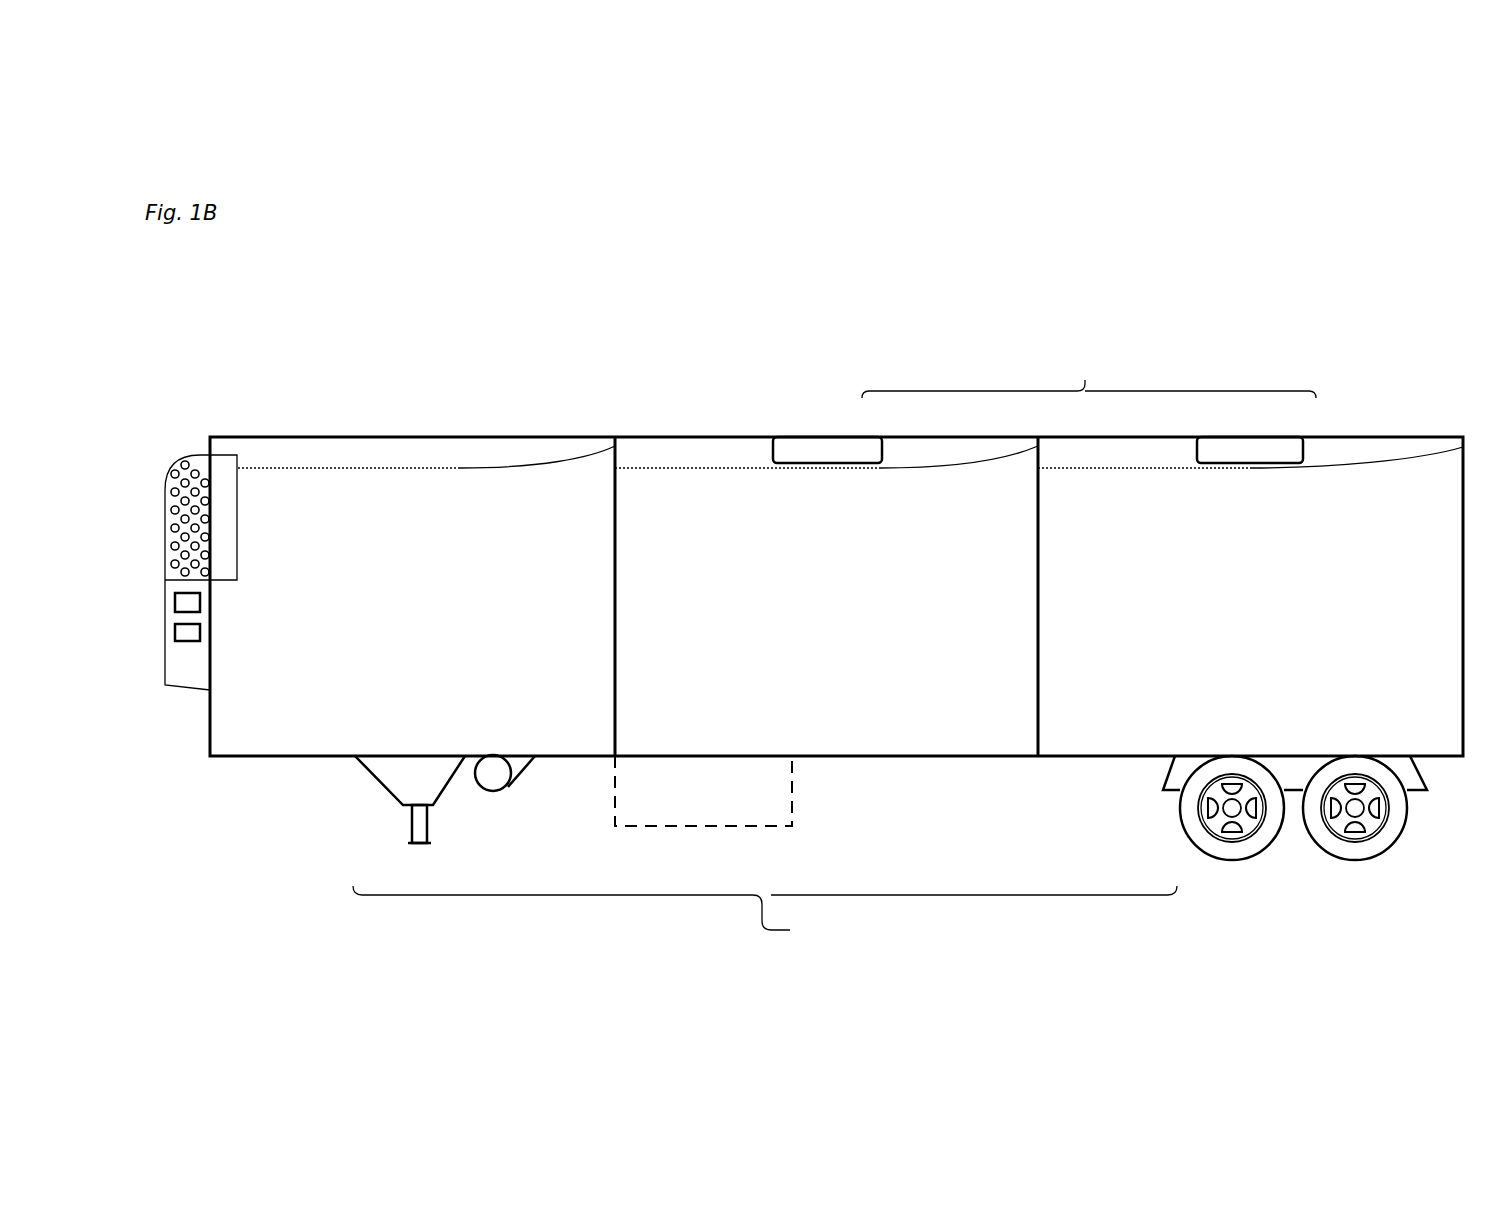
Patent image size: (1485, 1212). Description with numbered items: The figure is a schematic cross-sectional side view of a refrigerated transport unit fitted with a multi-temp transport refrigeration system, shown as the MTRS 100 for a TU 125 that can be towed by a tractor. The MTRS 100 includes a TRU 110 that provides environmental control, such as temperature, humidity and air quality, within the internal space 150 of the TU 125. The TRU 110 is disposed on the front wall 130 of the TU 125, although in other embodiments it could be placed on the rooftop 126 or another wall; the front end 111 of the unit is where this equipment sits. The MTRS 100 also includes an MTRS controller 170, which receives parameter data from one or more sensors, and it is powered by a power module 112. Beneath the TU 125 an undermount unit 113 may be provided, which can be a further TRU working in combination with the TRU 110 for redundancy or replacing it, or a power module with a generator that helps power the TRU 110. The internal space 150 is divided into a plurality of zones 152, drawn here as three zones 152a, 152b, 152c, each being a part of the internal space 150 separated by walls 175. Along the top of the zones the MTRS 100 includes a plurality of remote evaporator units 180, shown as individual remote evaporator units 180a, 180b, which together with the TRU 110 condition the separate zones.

The MTRS 100 is at (565, 300).
The front end 111 is at (158, 422).
The TRU 110 is at (188, 692).
The power module 112 is at (182, 643).
The MTRS controller 170 is at (174, 617).
The rooftop 126 is at (447, 437).
The walls 175 is at (612, 498).
The remote evaporator units 180 is at (1085, 380).
The solar panel 180a is at (822, 452).
The solar panel 180b is at (1230, 452).
The TU 125 is at (1365, 437).
The front wall 130 is at (208, 735).
The internal space 150 is at (328, 728).
The zones 152 is at (790, 930).
The first compartment 152a is at (393, 737).
The second compartment 152b is at (877, 737).
The third compartment 152c is at (1153, 737).
The undermount unit 113 is at (703, 826).